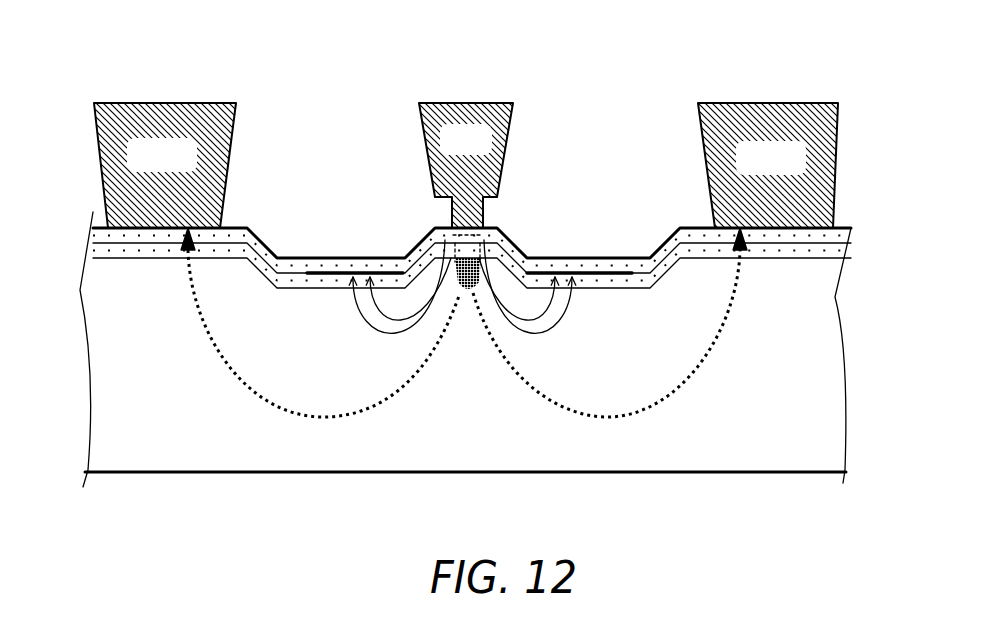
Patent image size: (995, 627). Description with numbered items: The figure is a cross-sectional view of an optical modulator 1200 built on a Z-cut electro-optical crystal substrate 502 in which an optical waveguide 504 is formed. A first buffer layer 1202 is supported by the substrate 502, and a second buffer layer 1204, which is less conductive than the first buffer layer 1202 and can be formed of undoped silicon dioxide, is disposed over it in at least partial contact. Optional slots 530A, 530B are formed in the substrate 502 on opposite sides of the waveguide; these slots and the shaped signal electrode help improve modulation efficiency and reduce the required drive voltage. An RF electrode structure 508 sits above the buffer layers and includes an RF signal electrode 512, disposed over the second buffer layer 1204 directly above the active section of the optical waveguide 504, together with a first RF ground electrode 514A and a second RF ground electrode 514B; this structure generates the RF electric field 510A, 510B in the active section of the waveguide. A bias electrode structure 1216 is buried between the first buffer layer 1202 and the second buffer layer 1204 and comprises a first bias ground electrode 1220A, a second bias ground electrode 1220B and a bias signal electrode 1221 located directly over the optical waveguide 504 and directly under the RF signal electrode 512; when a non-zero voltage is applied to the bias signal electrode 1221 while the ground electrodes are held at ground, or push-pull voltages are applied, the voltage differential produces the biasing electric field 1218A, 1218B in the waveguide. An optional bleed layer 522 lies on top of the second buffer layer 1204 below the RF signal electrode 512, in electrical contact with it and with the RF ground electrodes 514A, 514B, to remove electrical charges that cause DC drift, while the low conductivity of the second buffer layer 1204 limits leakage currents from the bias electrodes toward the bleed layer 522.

The optical modulator 1200 is at (615, 40).
The substrate 502 is at (808, 453).
The optical waveguide 504 is at (471, 340).
The RF electrode structure 508 is at (413, 53).
The RF electric field 510A is at (250, 387).
The RF electric field 510B is at (680, 388).
The RF signal electrode 512 is at (487, 151).
The RF ground electrode 514A is at (190, 167).
The RF ground electrode 514B is at (798, 170).
The bleed layer 522 is at (838, 225).
The slot 530A is at (367, 170).
The slot 530B is at (574, 158).
The first buffer layer 1202 is at (841, 256).
The second buffer layer 1204 is at (847, 237).
The bias electrode structure 1216 is at (322, 302).
The biasing electric field 1218A is at (377, 320).
The biasing electric field 1218B is at (537, 327).
The first bias ground electrode 1220A is at (341, 257).
The second bias ground electrode 1220B is at (603, 273).
The bias signal electrode 1221 is at (445, 235).